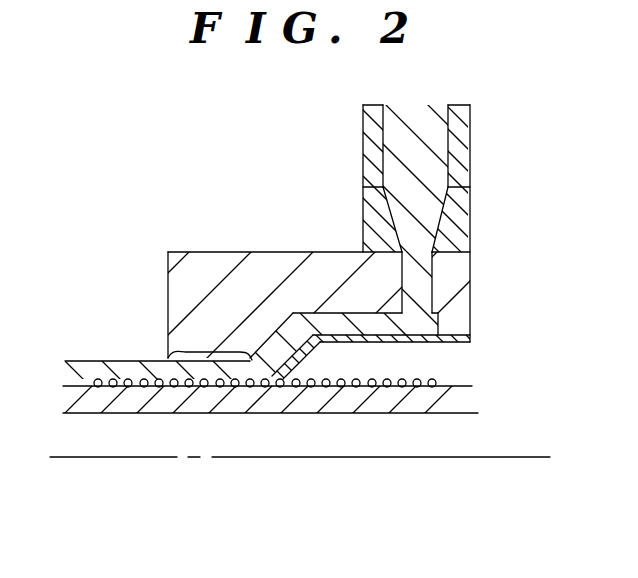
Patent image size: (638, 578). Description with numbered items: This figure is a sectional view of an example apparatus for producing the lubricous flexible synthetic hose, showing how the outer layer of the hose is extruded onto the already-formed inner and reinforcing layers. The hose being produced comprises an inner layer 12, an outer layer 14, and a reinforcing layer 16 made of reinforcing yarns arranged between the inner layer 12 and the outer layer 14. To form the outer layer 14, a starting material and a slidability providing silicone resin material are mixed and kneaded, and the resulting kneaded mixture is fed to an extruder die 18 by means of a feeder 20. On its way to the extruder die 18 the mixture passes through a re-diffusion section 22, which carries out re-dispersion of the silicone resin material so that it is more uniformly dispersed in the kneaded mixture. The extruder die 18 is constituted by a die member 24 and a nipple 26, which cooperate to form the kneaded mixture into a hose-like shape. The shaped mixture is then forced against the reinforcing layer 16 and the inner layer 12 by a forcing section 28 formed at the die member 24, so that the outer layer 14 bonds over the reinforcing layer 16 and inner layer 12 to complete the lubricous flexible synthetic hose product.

The inner layer 12 is at (433, 402).
The outer layer 14 is at (87, 360).
The reinforcing layer 16 is at (273, 389).
The extruder die 18 is at (324, 284).
The feeder 20 is at (463, 121).
The re-diffusion section 22 is at (458, 212).
The die member 24 is at (455, 268).
The nipple 26 is at (372, 353).
The forcing section 28 is at (197, 350).